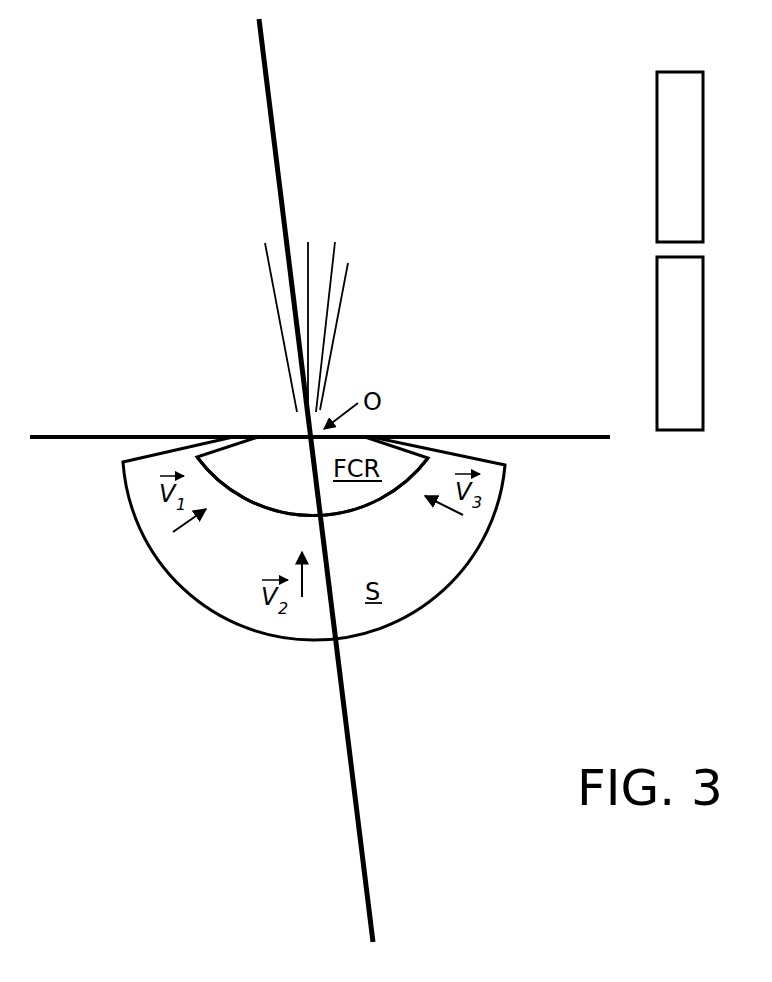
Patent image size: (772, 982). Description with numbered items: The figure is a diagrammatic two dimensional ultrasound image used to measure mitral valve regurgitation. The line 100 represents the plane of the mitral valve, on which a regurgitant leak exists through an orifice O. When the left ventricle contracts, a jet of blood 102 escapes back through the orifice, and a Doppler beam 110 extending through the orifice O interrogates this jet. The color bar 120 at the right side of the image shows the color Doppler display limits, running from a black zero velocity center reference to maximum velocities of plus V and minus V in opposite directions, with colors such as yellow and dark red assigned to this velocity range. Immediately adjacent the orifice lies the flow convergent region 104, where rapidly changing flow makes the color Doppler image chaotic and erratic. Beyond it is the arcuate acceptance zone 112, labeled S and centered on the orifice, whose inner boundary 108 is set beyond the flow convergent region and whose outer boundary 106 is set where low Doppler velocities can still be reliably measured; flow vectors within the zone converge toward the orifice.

The line representing the plane of the mitral valve 100 is at (467, 437).
The jet of blood 102 is at (343, 300).
The flow convergent region 104 is at (277, 458).
The outer boundary of the acceptance zone 106 is at (203, 607).
The inner boundary of the acceptance zone 108 is at (390, 497).
The Doppler beam 110 is at (270, 100).
The acceptance zone 112 is at (447, 592).
The color bar 120 is at (605, 115).